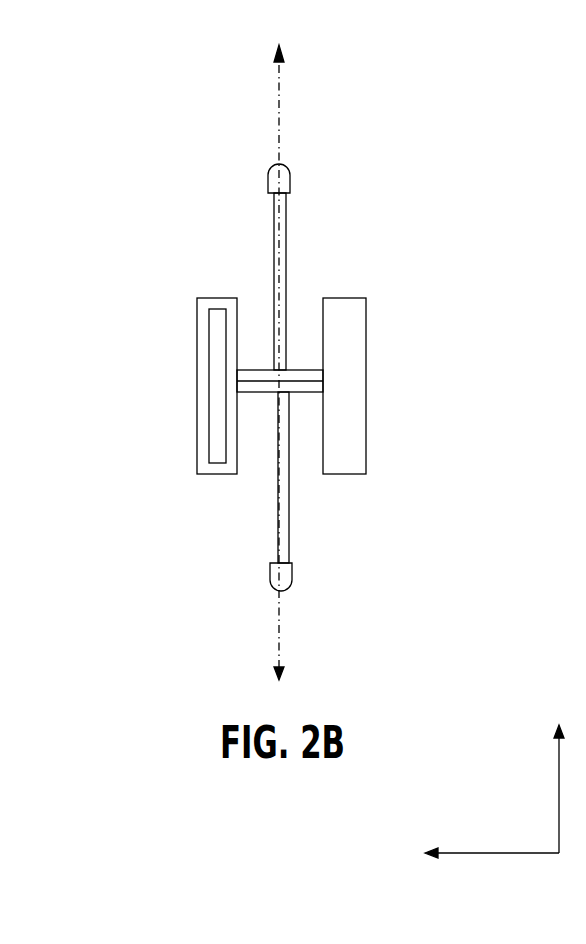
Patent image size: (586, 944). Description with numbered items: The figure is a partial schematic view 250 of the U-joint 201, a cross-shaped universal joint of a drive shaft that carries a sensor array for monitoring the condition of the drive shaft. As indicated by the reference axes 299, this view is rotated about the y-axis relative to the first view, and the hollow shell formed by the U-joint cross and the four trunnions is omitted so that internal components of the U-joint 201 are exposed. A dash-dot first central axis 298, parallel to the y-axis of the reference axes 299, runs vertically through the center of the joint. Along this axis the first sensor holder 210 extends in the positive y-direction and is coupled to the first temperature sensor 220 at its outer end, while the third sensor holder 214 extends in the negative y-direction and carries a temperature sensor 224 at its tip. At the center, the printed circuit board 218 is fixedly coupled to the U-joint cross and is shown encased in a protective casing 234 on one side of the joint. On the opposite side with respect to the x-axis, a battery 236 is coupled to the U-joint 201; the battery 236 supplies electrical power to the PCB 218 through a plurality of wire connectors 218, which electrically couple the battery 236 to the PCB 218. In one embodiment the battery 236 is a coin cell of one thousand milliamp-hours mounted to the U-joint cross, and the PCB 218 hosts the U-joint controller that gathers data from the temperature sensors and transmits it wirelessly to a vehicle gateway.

The first central axis 298 is at (279, 97).
The partial schematic view 250 is at (467, 73).
The U-joint 201 is at (413, 162).
The first temperature sensor 220 is at (280, 163).
The first sensor holder 210 is at (287, 243).
The printed circuit board 218 is at (300, 370).
The protective casing 234 is at (198, 357).
The battery 236 is at (364, 312).
The third sensor holder 214 is at (288, 520).
The temperature sensor 224 is at (292, 575).
The reference axes 299 is at (490, 767).